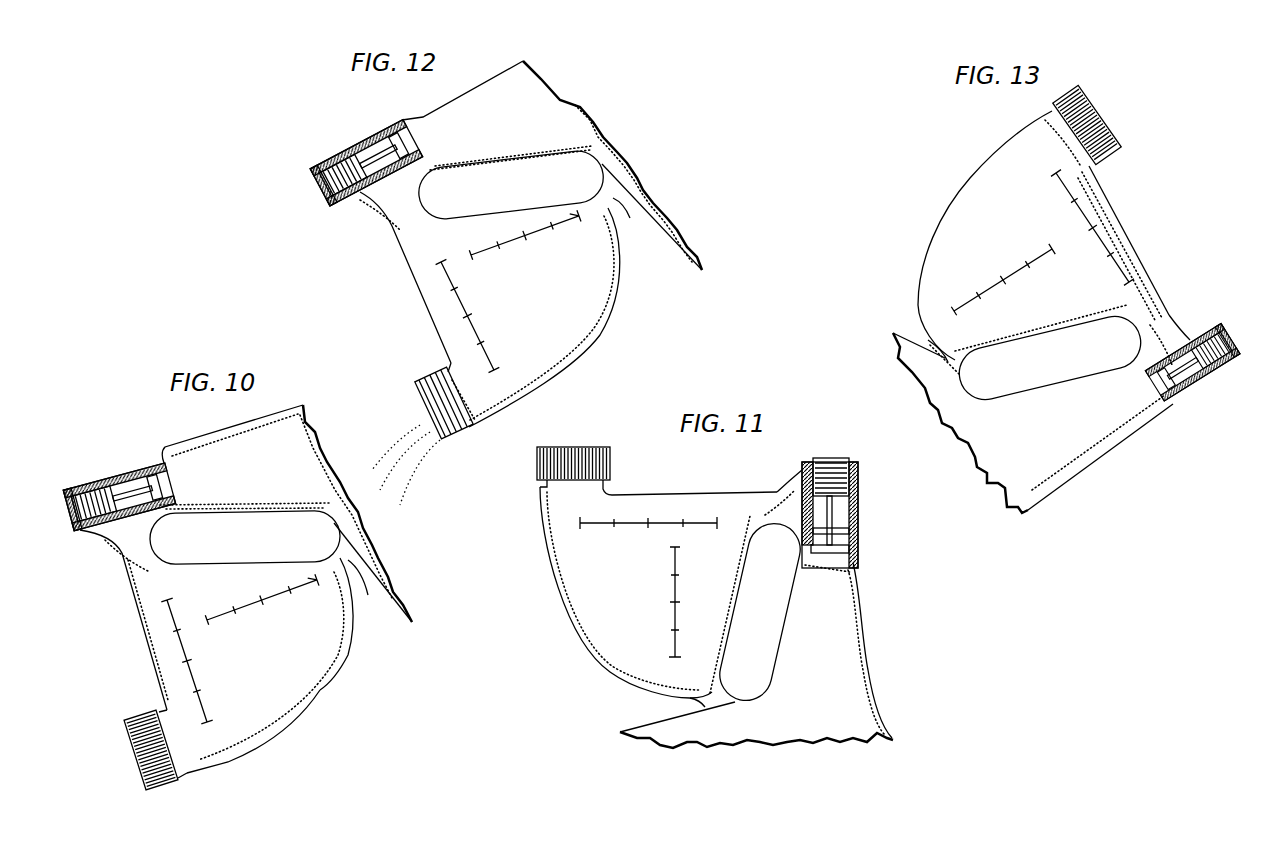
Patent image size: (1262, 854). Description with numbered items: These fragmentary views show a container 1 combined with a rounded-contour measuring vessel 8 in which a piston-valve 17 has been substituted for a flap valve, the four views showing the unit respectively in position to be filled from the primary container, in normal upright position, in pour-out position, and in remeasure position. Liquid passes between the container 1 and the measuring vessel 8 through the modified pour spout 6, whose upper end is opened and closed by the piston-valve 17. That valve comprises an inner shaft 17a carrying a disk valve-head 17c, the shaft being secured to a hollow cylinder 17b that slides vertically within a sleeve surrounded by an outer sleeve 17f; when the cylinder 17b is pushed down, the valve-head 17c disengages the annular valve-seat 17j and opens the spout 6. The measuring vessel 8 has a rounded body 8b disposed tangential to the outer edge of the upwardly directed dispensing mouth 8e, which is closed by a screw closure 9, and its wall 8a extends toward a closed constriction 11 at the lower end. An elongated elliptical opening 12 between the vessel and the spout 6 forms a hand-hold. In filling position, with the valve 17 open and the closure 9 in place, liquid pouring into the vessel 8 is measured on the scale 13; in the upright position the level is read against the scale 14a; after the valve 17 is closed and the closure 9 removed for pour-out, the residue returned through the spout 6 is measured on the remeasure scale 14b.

In FIG. 10, the container 1 is at (377, 563).
In FIG. 12, the container 1 is at (663, 219).
In FIG. 11, the container 1 is at (777, 712).
In FIG. 13, the container 1 is at (1005, 472).
In FIG. 10, the spout 6 is at (247, 435).
In FIG. 11, the spout 6 is at (860, 667).
In FIG. 13, the spout 6 is at (1107, 439).
In FIG. 10, the measuring vessel 8 is at (337, 662).
In FIG. 10, the straight wall of bottle 8a is at (145, 638).
In FIG. 12, the straight wall of bottle 8a is at (415, 269).
In FIG. 11, the straight wall of bottle 8a is at (722, 497).
In FIG. 13, the straight wall of bottle 8a is at (1147, 262).
In FIG. 10, the rounded body 8b is at (290, 720).
In FIG. 12, the rounded body 8b is at (580, 345).
In FIG. 11, the rounded body 8b is at (597, 653).
In FIG. 13, the rounded body 8b is at (976, 173).
In FIG. 12, the dispensing mouth 8e is at (437, 370).
In FIG. 10, the closure 9 is at (138, 757).
In FIG. 11, the closure 9 is at (603, 470).
In FIG. 13, the closure 9 is at (1114, 133).
In FIG. 10, the closed constriction 11 is at (353, 572).
In FIG. 12, the closed constriction 11 is at (620, 201).
In FIG. 11, the closed constriction 11 is at (693, 705).
In FIG. 13, the closed constriction 11 is at (946, 351).
In FIG. 10, the elongated elliptical opening 12 is at (257, 533).
In FIG. 12, the elongated elliptical opening 12 is at (527, 174).
In FIG. 11, the elongated elliptical opening 12 is at (758, 560).
In FIG. 13, the elongated elliptical opening 12 is at (1016, 359).
In FIG. 10, the measuring scale 13 is at (187, 665).
In FIG. 12, the measuring scale 13 is at (458, 305).
In FIG. 11, the measuring scale 13 is at (663, 520).
In FIG. 13, the measuring scale 13 is at (1103, 231).
In FIG. 10, the measuring scale 14a is at (262, 600).
In FIG. 12, the measuring scale 14a is at (534, 230).
In FIG. 11, the measuring scale 14a is at (727, 640).
In FIG. 13, the measuring scale 14a is at (950, 311).
In FIG. 10, the remeasure scale 14b is at (283, 587).
In FIG. 12, the remeasure scale 14b is at (507, 244).
In FIG. 11, the remeasure scale 14b is at (713, 621).
In FIG. 13, the remeasure scale 14b is at (1036, 275).
In FIG. 10, the piston-valve 17 is at (116, 467).
In FIG. 12, the piston-valve 17 is at (311, 173).
In FIG. 11, the piston-valve 17 is at (853, 496).
In FIG. 13, the piston-valve 17 is at (1216, 337).
In FIG. 11, the inner shaft 17a is at (855, 537).
In FIG. 11, the hollow cylinder 17b is at (823, 458).
In FIG. 10, the valve-head 17c is at (162, 465).
In FIG. 11, the valve-head 17c is at (855, 553).
In FIG. 11, the outer sleeve 17f is at (857, 480).
In FIG. 11, the annular valve-seat 17j is at (853, 515).